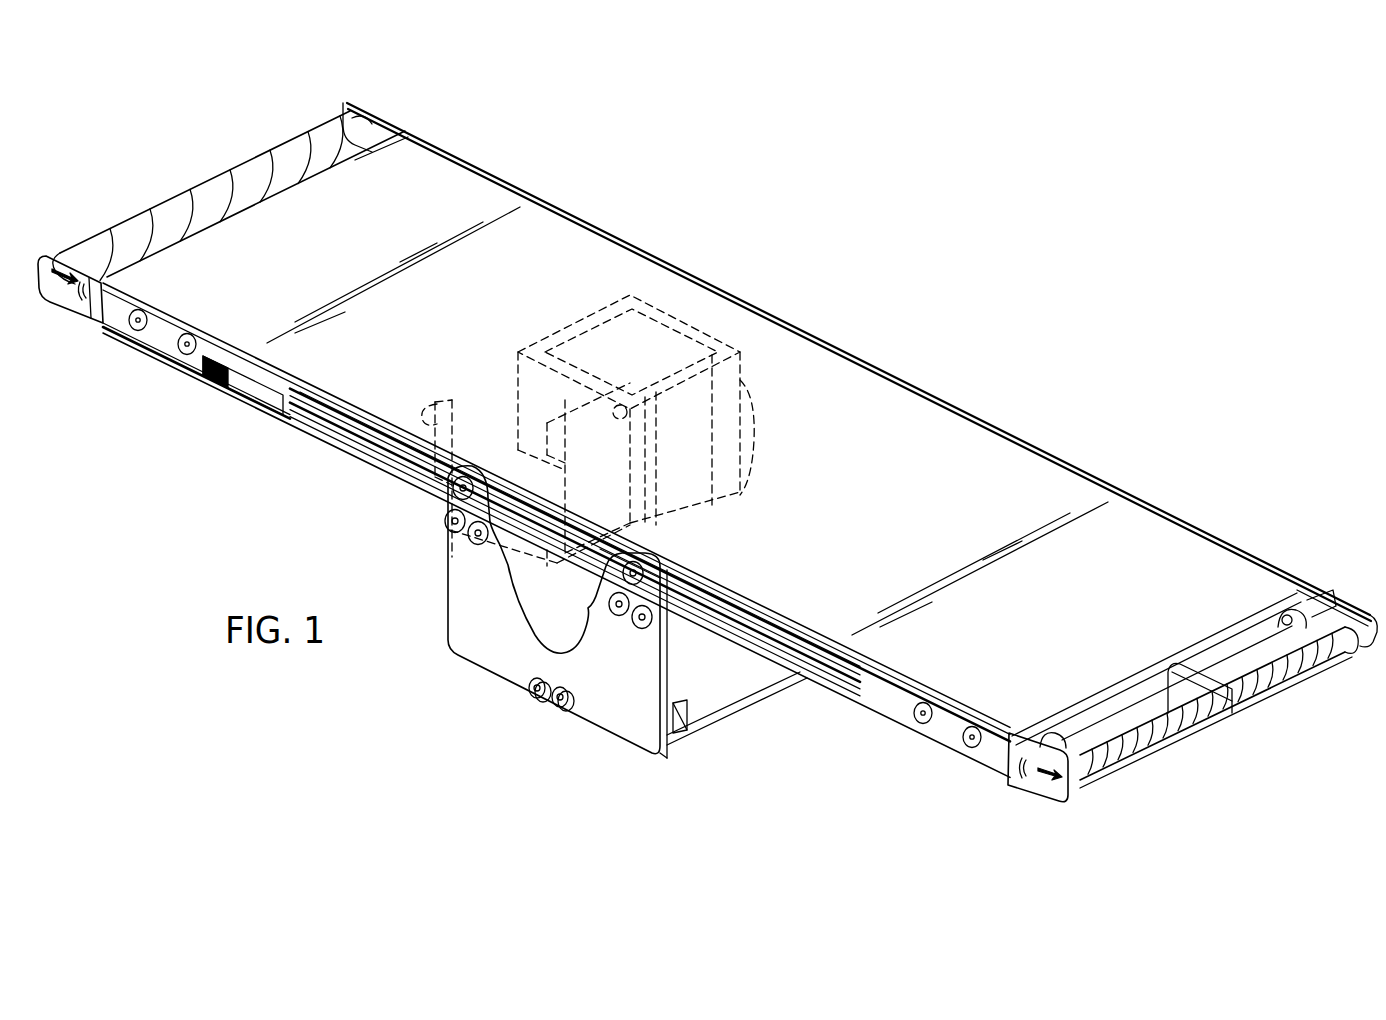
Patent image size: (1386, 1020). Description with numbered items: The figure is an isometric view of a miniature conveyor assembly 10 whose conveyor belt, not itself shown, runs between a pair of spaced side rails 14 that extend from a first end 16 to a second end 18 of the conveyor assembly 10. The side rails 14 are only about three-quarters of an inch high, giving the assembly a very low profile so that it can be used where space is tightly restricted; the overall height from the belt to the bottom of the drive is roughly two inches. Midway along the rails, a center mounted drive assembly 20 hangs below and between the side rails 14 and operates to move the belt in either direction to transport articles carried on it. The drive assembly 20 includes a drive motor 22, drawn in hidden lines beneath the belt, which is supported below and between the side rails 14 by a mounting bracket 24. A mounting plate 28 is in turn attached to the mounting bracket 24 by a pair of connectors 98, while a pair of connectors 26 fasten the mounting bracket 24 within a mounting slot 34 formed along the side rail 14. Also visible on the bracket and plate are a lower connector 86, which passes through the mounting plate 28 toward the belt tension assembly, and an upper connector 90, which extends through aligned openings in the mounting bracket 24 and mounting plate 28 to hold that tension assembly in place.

The miniature conveyor assembly 10 is at (866, 323).
The side rails 14 is at (873, 698).
The first end 16 is at (184, 184).
The second end 18 is at (1289, 684).
The center mounted drive assembly 20 is at (473, 699).
The drive motor 22 is at (577, 333).
The mounting bracket 24 is at (645, 594).
The connectors 26 is at (456, 476).
The mounting plate 28 is at (628, 720).
The mounting slot 34 is at (265, 378).
The lower connector 86 is at (536, 698).
The upper connector 90 is at (452, 530).
The connectors 98 is at (480, 545).